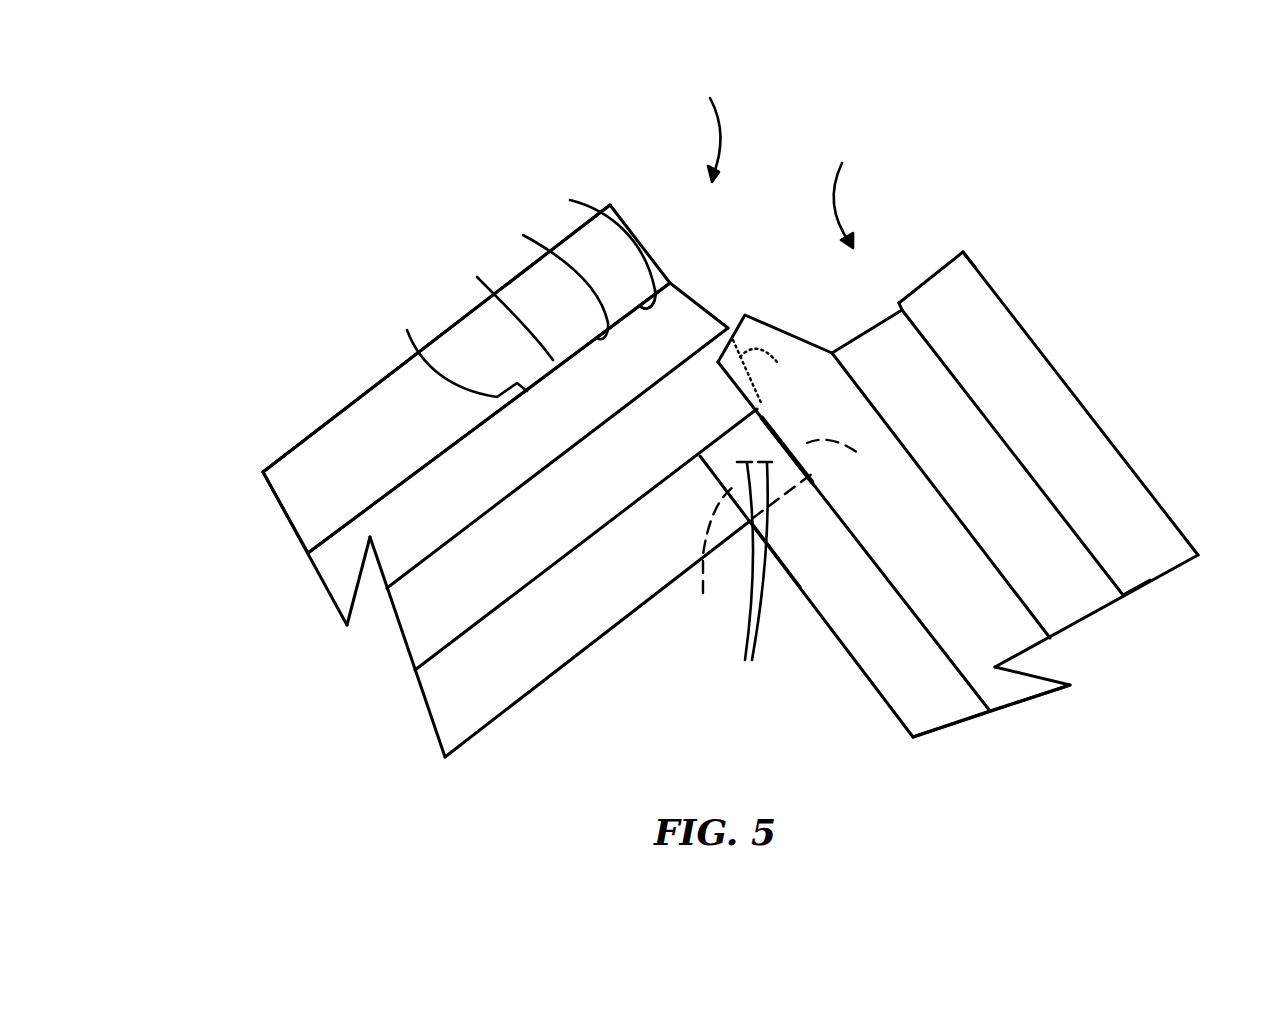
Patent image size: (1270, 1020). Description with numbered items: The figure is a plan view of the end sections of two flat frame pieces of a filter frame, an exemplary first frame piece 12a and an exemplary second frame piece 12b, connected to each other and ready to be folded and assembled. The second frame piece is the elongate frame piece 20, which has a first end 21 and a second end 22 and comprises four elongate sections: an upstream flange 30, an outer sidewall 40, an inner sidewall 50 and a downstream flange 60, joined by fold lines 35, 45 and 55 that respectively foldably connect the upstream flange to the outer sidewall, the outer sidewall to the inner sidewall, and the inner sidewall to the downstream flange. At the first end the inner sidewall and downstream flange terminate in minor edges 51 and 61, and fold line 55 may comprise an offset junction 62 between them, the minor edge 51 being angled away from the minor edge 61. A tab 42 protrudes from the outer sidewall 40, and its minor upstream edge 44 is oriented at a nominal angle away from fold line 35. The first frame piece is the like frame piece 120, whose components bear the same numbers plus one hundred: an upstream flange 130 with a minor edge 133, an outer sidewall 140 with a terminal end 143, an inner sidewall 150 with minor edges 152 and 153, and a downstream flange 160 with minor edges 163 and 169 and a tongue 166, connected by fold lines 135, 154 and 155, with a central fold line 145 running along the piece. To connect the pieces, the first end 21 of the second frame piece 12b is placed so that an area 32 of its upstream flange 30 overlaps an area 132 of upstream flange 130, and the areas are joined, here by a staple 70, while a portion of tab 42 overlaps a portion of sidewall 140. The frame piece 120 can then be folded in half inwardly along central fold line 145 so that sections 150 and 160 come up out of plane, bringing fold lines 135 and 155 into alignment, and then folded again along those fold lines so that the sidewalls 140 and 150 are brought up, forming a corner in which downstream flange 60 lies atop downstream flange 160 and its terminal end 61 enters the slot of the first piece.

The first frame piece 12a is at (363, 393).
The second frame piece 12b is at (1083, 400).
The frame piece 20 is at (1177, 527).
The first end 21 is at (848, 189).
The second end 22 is at (715, 123).
The upstream flange 30 is at (942, 703).
The area of upstream flange 32 is at (780, 477).
The fold line 35 is at (998, 687).
The outer sidewall 40 is at (1007, 687).
The tab 42 is at (782, 330).
The minor upstream edge of tab 44 is at (736, 382).
The fold line 45 is at (1050, 638).
The inner sidewall 50 is at (1073, 600).
The minor edge of inner sidewall 51 is at (862, 333).
The fold line 55 is at (1123, 597).
The downstream flange 60 is at (937, 297).
The minor edge of downstream flange 61 is at (963, 252).
The offset junction 62 is at (902, 310).
The staple 70 is at (751, 576).
The frame piece 120 is at (312, 433).
The upstream flange 130 is at (432, 722).
The area of upstream flange 132 is at (707, 557).
The minor edge of upstream flange 133 is at (828, 479).
The fold line 135 is at (414, 675).
The outer sidewall 140 is at (403, 633).
The terminal end of outer sidewall 143 is at (780, 372).
The central fold line 145 is at (351, 624).
The inner sidewall 150 is at (338, 568).
The minor edge of inner sidewall 152 is at (543, 274).
The minor edge of inner sidewall 153 is at (703, 305).
The fold line 154 is at (455, 353).
The fold line 155 is at (308, 553).
The downstream flange 160 is at (290, 490).
The minor edge of downstream flange 163 is at (640, 242).
The tongue 166 is at (495, 306).
The minor edge of downstream flange 169 is at (589, 242).